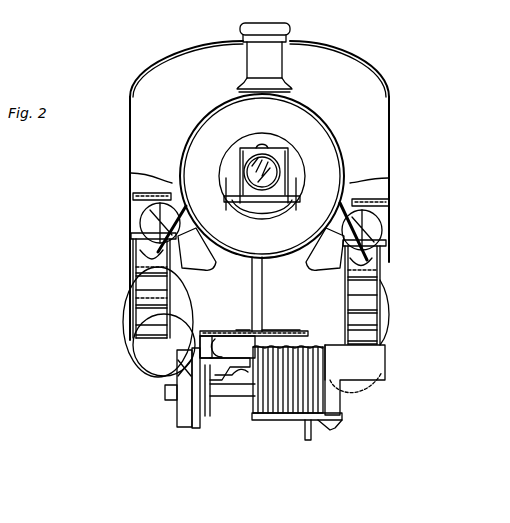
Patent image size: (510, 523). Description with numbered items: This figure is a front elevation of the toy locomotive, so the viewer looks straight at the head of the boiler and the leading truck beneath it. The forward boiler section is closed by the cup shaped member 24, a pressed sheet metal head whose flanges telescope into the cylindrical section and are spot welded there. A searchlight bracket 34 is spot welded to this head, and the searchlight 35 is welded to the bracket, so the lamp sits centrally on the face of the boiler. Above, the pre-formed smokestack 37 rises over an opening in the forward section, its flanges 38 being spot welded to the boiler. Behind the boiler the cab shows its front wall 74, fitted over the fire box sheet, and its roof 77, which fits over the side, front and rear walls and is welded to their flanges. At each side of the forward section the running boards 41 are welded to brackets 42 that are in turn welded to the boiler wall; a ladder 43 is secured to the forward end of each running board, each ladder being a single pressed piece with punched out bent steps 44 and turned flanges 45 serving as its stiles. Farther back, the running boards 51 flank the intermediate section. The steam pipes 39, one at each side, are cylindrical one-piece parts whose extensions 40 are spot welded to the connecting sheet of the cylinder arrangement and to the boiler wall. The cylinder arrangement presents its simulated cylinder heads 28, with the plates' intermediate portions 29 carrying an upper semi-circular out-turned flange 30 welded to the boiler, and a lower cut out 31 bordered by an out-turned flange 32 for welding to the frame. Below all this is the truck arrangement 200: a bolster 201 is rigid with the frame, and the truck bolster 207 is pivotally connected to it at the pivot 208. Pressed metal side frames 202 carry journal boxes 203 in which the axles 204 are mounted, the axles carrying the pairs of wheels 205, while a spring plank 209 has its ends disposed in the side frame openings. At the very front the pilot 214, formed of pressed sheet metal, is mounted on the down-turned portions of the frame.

The cup shaped member 24 is at (312, 128).
The cylinder heads 28 is at (140, 292).
The intermediate portions 29 is at (290, 328).
The out-turned flange 30 is at (252, 262).
The cut out 31 is at (177, 333).
The out-turned flange 32 is at (240, 325).
The searchlight bracket 34 is at (290, 196).
The searchlight 35 is at (282, 158).
The smokestack 37 is at (282, 50).
The flanges 38 is at (286, 86).
The steam pipes 39 is at (180, 256).
The extensions 40 is at (131, 170).
The running boards 41 is at (131, 236).
The brackets 42 is at (160, 223).
The ladder 43 is at (140, 265).
The steps 44 is at (150, 328).
The turned flanges 45 is at (150, 305).
The running boards 51 is at (135, 195).
The front wall 74 is at (390, 134).
The roof 77 is at (355, 55).
The truck arrangement 200 is at (213, 400).
The bolster 201 is at (232, 362).
The side frames 202 is at (194, 420).
The journal boxes 203 is at (200, 405).
The axles 204 is at (240, 400).
The wheels 205 is at (180, 388).
The truck bolster 207 is at (228, 332).
The pivotal connection 208 is at (275, 340).
The spring plank 209 is at (232, 398).
The pilot 214 is at (338, 432).